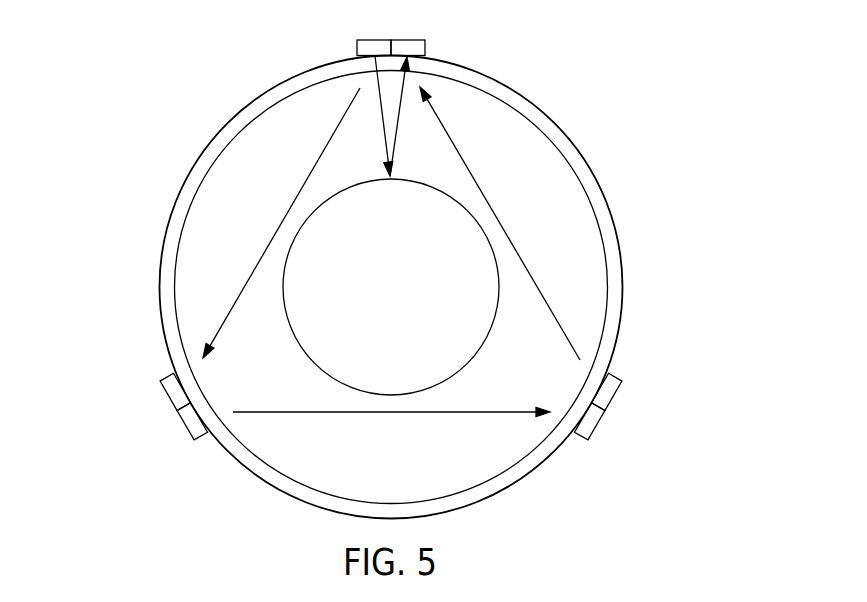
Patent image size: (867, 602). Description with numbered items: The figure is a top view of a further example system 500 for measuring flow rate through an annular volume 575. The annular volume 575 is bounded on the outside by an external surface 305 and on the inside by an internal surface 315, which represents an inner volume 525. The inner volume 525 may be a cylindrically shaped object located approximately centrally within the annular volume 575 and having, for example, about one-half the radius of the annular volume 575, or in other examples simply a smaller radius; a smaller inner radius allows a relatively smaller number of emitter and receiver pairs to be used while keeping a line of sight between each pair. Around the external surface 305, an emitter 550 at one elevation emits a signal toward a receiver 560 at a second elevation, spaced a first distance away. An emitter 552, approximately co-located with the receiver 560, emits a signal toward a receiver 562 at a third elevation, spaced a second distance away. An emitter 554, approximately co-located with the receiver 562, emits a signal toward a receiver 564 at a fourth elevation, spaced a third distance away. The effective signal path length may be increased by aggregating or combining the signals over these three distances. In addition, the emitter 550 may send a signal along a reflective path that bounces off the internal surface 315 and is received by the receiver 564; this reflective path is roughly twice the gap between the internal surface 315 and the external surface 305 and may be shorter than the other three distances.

The system 500 is at (180, 93).
The external surface 305 is at (607, 193).
The internal surface 315 is at (538, 125).
The inner volume 525 is at (408, 296).
The annular volume 575 is at (193, 288).
The emitter 550 is at (368, 41).
The receiver 564 is at (411, 39).
The emitter 554 is at (615, 397).
The receiver 562 is at (597, 428).
The receiver 560 is at (167, 400).
The emitter 552 is at (185, 428).